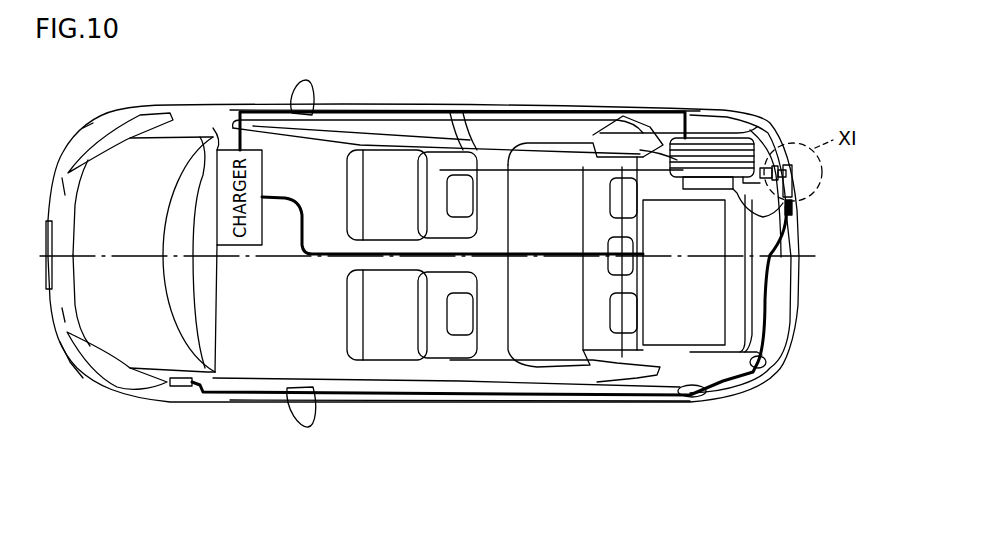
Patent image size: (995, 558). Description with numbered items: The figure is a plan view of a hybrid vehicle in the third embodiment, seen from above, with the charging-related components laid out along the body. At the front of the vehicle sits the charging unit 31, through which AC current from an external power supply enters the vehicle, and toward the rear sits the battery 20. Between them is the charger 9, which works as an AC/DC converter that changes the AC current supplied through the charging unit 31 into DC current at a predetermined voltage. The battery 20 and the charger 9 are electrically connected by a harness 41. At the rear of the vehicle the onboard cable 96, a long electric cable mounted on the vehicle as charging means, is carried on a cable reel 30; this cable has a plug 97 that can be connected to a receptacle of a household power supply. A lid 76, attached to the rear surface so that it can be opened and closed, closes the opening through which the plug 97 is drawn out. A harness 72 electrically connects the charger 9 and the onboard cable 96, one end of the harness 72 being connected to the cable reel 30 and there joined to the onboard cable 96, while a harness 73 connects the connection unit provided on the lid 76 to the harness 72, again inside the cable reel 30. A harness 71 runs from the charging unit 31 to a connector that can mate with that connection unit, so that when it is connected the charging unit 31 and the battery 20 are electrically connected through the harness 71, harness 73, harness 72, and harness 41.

The charger 9 is at (215, 197).
The harness 41 is at (302, 218).
The harness 72 is at (490, 110).
The harness 71 is at (497, 398).
The onboard cable 96 is at (697, 140).
The cable reel 30 is at (732, 160).
The plug 97 is at (766, 166).
The lid 76 is at (786, 178).
The harness 73 is at (793, 217).
The battery 20 is at (680, 346).
The charging unit 31 is at (182, 387).